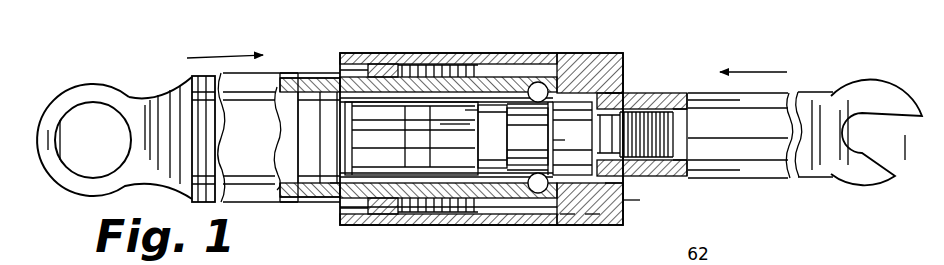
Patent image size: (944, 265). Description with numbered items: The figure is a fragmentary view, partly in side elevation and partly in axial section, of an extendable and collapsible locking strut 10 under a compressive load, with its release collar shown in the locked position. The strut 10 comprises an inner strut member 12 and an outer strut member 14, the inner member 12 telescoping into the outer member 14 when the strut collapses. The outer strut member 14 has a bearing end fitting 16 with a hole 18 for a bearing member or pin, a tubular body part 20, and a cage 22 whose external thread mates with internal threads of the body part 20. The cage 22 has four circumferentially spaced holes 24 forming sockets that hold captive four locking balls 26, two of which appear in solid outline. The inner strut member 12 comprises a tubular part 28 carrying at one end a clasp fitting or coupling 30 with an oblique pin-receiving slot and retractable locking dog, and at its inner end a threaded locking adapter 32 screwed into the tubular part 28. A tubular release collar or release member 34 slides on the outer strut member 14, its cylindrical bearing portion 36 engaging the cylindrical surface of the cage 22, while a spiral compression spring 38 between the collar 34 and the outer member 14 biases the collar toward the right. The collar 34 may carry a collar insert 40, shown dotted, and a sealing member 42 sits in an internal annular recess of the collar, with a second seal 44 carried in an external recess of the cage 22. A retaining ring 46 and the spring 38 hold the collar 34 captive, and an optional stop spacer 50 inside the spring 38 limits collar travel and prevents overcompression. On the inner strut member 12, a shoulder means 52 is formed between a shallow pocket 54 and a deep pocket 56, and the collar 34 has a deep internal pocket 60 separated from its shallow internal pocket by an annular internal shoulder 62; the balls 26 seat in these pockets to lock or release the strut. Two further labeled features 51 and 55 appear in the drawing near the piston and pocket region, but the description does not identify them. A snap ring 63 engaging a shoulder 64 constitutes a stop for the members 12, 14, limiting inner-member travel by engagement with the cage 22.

The strut construction 10 is at (673, 197).
The inner strut member 12 is at (750, 147).
The outer strut member 14 is at (230, 107).
The bearing end fitting 16 is at (147, 110).
The hole 18 is at (90, 123).
The tubular body part 20 is at (290, 77).
The cage 22 is at (490, 62).
The holes 24 is at (554, 126).
The balls 26 is at (540, 82).
The tubular part 28 is at (668, 95).
The clasp fitting 30 is at (822, 113).
The threaded locking adapter 32 is at (420, 207).
The release collar 34 is at (435, 55).
The cylindrical bearing portion 36 is at (468, 170).
The spiral compression spring 38 is at (402, 70).
The collar insert 40 is at (572, 60).
The sealing member 42 is at (608, 58).
The second seal 44 is at (385, 75).
The retaining ring 46 is at (627, 198).
The stop spacer 50 is at (415, 170).
The passage 51 is at (556, 142).
The shoulder means 52 is at (475, 120).
The shallow pocket 54 is at (508, 180).
The passage 55 is at (440, 127).
The deep pocket 56 is at (482, 183).
The deep internal pocket 60 is at (590, 225).
The annular internal shoulder 62 is at (568, 226).
The snap ring 63 is at (330, 187).
The shoulder 64 is at (393, 170).